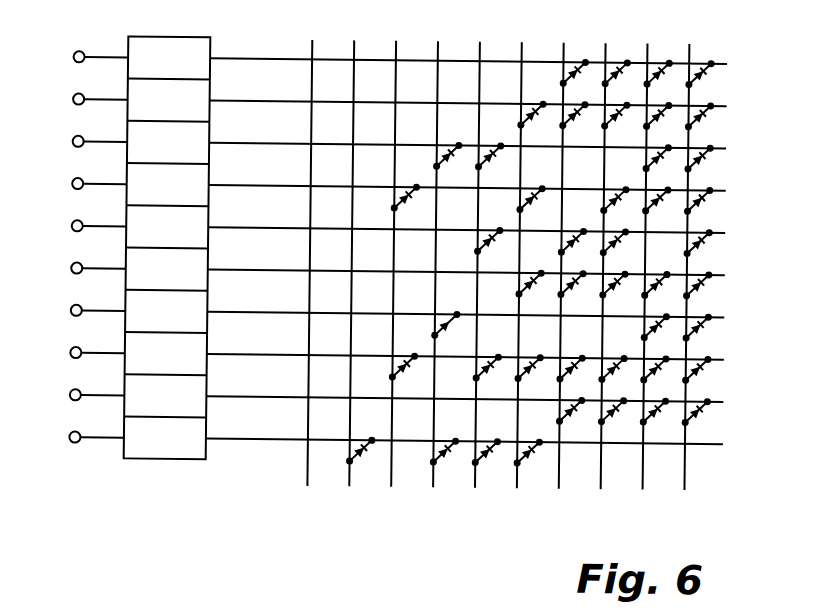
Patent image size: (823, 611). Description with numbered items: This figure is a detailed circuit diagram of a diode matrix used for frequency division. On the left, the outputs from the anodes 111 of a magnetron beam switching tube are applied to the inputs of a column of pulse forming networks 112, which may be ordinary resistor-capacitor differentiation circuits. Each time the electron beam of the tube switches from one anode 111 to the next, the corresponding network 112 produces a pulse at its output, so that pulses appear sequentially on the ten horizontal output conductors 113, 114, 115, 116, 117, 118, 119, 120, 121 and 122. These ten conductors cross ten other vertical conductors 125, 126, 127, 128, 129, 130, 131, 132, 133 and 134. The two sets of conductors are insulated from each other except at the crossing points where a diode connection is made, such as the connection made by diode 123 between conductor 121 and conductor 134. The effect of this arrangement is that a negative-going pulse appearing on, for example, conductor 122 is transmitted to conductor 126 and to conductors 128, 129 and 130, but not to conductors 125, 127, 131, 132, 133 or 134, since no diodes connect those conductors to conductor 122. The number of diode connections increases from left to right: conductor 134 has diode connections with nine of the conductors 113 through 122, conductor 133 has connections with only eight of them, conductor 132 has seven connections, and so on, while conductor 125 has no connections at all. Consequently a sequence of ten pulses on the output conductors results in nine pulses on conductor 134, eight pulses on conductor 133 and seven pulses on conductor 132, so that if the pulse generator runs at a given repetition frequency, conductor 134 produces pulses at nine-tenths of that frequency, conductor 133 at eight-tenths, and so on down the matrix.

The anodes 111 is at (71, 60).
The pulse forming networks 112 is at (167, 247).
The conductor 113 is at (233, 62).
The conductor 114 is at (233, 104).
The conductor 115 is at (233, 146).
The conductor 116 is at (233, 188).
The conductor 117 is at (233, 230).
The conductor 118 is at (233, 273).
The conductor 119 is at (233, 315).
The conductor 120 is at (233, 357).
The conductor 121 is at (233, 400).
The conductor 122 is at (233, 442).
The diode 123 is at (705, 411).
The conductor 125 is at (310, 488).
The conductor 126 is at (352, 488).
The conductor 127 is at (394, 488).
The conductor 128 is at (436, 488).
The conductor 129 is at (478, 488).
The conductor 130 is at (520, 488).
The conductor 131 is at (561, 488).
The conductor 132 is at (603, 488).
The conductor 133 is at (645, 488).
The conductor 134 is at (687, 488).